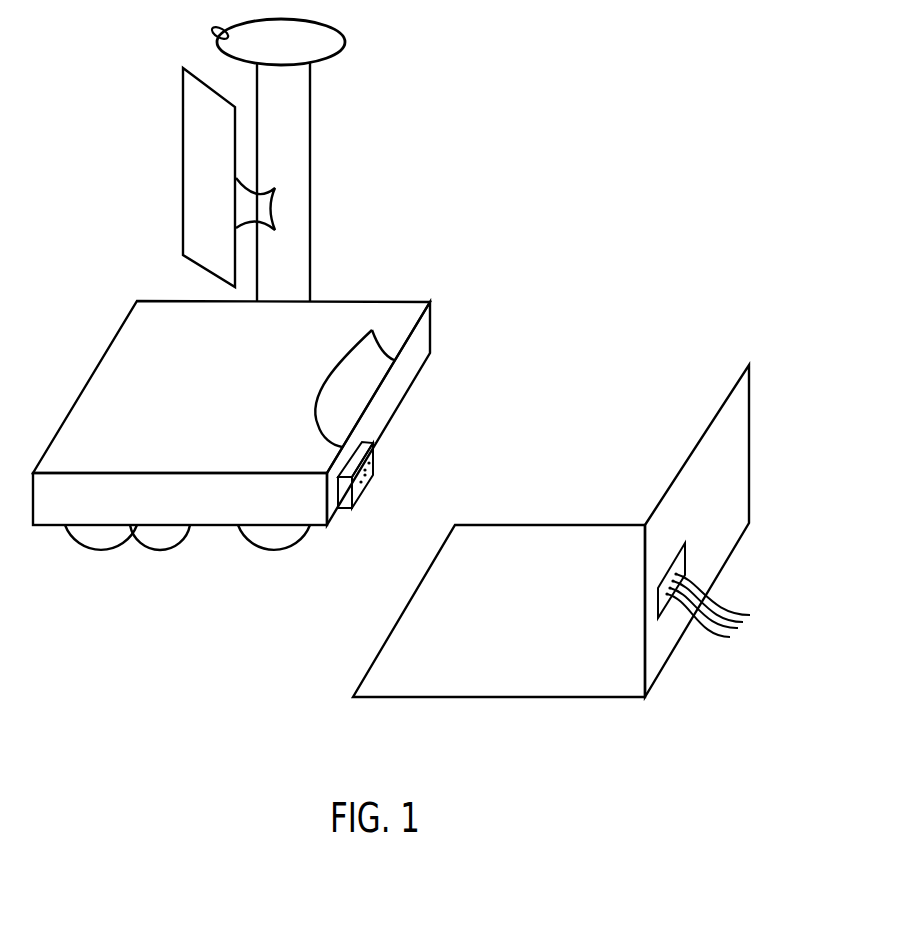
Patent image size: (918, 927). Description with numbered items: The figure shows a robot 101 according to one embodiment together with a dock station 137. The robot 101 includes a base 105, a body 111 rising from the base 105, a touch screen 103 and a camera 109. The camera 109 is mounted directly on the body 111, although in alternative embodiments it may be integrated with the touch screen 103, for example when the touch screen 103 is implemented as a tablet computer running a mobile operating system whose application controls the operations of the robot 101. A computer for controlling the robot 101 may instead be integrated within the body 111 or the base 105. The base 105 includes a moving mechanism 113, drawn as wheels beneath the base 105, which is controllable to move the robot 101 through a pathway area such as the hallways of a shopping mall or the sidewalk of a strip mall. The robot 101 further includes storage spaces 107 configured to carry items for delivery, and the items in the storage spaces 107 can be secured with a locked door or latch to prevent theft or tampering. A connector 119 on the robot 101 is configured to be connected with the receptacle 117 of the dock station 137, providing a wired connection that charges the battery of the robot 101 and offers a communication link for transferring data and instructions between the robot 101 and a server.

The robot 101 is at (335, 36).
The touch screen 103 is at (200, 125).
The base 105 is at (430, 328).
The storage spaces 107 is at (360, 378).
The camera 109 is at (213, 36).
The body 111 is at (311, 197).
The moving mechanism 113 is at (296, 548).
The receptacle 117 is at (685, 563).
The connector 119 is at (375, 457).
The dock station 137 is at (732, 403).